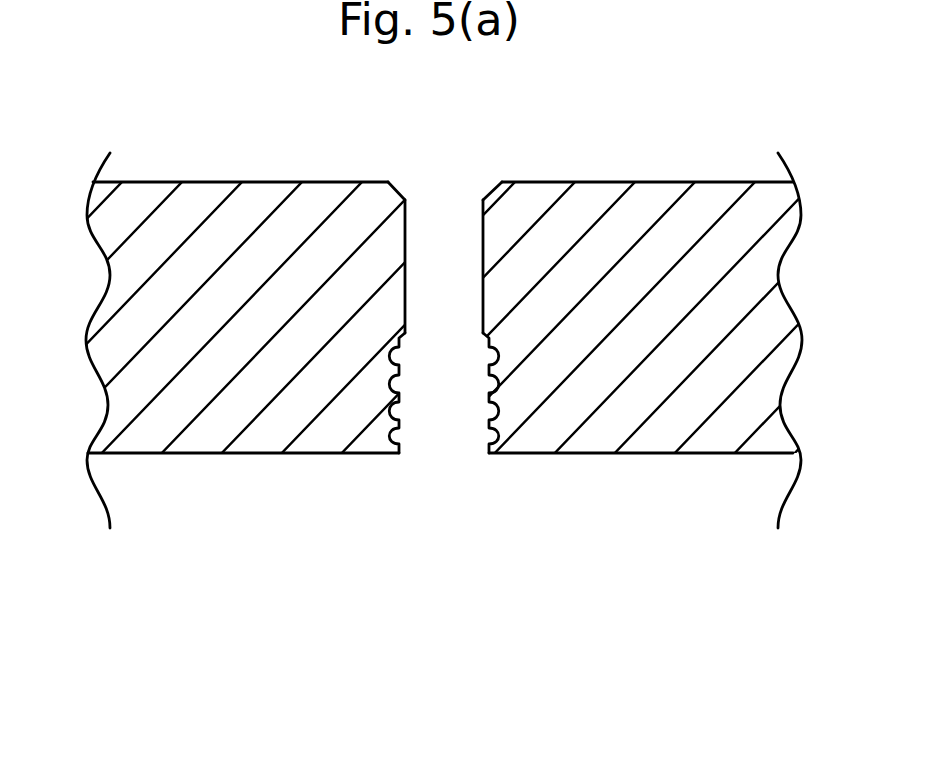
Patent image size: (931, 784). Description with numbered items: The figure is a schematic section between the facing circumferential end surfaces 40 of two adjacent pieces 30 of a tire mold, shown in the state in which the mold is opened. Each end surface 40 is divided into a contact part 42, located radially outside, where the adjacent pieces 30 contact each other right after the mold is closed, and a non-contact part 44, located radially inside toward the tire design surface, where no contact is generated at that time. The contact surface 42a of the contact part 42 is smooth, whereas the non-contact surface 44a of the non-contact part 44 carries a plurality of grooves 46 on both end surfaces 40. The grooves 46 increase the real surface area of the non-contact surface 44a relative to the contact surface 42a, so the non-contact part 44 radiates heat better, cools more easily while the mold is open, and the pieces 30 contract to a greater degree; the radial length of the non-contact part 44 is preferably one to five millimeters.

The piece 30 is at (192, 435).
The end surface 40 is at (460, 321).
The contact part 42 is at (384, 194).
The contact surface 42a is at (483, 252).
The non-contact part 44 is at (370, 438).
The non-contact surface 44a is at (488, 375).
The groove 46 is at (396, 433).